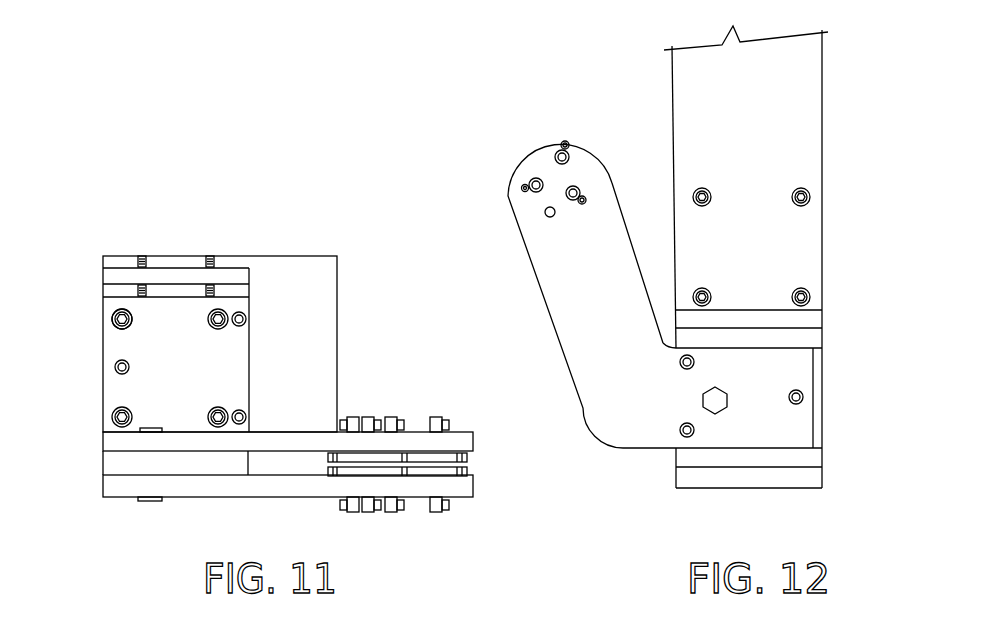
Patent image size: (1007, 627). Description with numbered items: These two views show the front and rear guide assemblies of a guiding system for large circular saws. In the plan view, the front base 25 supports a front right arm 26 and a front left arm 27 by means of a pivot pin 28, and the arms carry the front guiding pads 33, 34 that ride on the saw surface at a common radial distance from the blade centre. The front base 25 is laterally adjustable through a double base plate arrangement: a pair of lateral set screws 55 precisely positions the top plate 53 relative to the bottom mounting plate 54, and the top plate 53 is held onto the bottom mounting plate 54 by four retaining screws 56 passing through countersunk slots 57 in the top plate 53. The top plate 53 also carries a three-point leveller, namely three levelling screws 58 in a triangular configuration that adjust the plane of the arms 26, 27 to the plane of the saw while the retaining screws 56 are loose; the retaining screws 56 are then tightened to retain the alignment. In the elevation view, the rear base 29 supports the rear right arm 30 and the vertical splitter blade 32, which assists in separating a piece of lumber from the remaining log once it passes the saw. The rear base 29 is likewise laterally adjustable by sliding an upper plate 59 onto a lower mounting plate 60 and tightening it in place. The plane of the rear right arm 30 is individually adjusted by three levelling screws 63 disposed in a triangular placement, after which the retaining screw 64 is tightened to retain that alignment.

In FIG. 11, the front base 25 is at (206, 212).
In FIG. 11, the front right arm 26 is at (465, 487).
In FIG. 11, the front left arm 27 is at (470, 440).
In FIG. 11, the pivot pin 28 is at (145, 503).
In FIG. 12, the rear base 29 is at (850, 342).
In FIG. 12, the rear right arm 30 is at (548, 262).
In FIG. 12, the splitter blade 32 is at (806, 126).
In FIG. 11, the front guiding pad 33 is at (370, 455).
In FIG. 11, the front guiding pad 34 is at (440, 457).
In FIG. 11, the top plate 53 is at (118, 397).
In FIG. 11, the bottom mounting plate 54 is at (280, 258).
In FIG. 11, the lateral set screws 55 is at (139, 256).
In FIG. 11, the retaining screws 56 is at (118, 320).
In FIG. 11, the countersunk slots 57 is at (120, 332).
In FIG. 11, the levelling screws 58 is at (118, 370).
In FIG. 12, the upper plate 59 is at (827, 461).
In FIG. 12, the lower mounting plate 60 is at (827, 480).
In FIG. 12, the levelling screws 63 is at (681, 368).
In FIG. 12, the retaining screw 64 is at (728, 393).